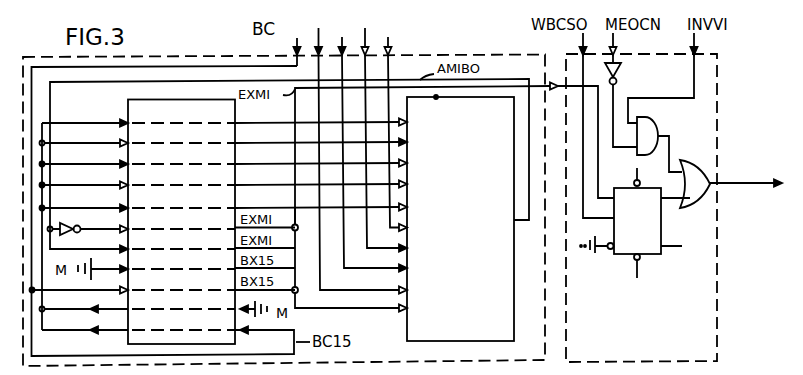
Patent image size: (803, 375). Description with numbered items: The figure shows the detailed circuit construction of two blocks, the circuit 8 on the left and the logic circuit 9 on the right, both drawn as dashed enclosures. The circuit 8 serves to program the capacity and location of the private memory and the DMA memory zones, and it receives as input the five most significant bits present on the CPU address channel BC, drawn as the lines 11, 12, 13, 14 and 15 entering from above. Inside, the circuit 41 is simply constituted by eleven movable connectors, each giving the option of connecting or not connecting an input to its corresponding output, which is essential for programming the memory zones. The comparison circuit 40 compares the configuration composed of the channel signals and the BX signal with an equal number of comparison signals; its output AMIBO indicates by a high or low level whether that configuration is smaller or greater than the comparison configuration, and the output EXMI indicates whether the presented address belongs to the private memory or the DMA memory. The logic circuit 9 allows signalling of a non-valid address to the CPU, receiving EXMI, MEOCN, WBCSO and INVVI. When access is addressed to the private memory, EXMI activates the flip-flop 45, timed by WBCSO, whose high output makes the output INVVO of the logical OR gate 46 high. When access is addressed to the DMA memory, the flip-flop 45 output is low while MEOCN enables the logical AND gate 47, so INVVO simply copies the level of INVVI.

The circuit 8 is at (231, 57).
The logic circuit 9 is at (706, 330).
The address channel bit 11 is at (392, 125).
The address channel bit 12 is at (381, 131).
The address channel bit 13 is at (370, 146).
The address channel bit 14 is at (358, 152).
The address channel bit 15 is at (299, 43).
The comparison circuit 40 is at (406, 339).
The circuit 41 is at (129, 340).
The flip-flop 45 is at (652, 247).
The logical OR gate 46 is at (697, 200).
The logical AND gate 47 is at (645, 125).